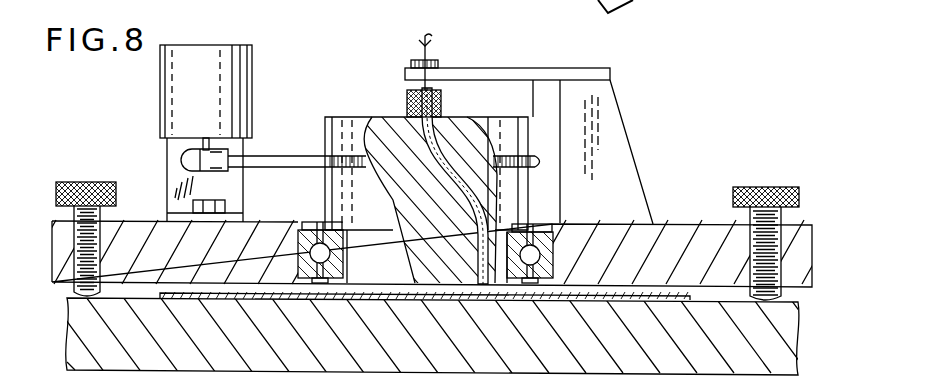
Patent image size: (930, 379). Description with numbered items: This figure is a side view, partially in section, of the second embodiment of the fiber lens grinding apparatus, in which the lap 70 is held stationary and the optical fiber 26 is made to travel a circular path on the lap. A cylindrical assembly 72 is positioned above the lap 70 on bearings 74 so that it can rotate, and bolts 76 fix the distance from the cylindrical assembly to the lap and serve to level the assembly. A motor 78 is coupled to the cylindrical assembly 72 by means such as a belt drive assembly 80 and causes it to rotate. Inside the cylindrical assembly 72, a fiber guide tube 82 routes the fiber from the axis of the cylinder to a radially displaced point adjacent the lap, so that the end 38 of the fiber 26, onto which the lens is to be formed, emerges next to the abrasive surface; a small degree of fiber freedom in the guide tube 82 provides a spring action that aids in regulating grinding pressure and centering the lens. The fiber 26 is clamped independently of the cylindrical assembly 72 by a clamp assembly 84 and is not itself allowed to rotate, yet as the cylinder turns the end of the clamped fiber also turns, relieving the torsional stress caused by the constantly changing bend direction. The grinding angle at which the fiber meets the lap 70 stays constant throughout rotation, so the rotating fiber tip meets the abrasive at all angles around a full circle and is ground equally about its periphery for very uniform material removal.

The optical fiber 26 is at (423, 47).
The end of fiber 38 is at (468, 266).
The lap 70 is at (585, 292).
The cylindrical assembly 72 is at (530, 134).
The bearings 74 is at (318, 243).
The bolts 76 is at (82, 182).
The motor 78 is at (243, 65).
The belt drive assembly 80 is at (273, 157).
The fiber guide tube 82 is at (452, 177).
The clamp assembly 84 is at (405, 76).